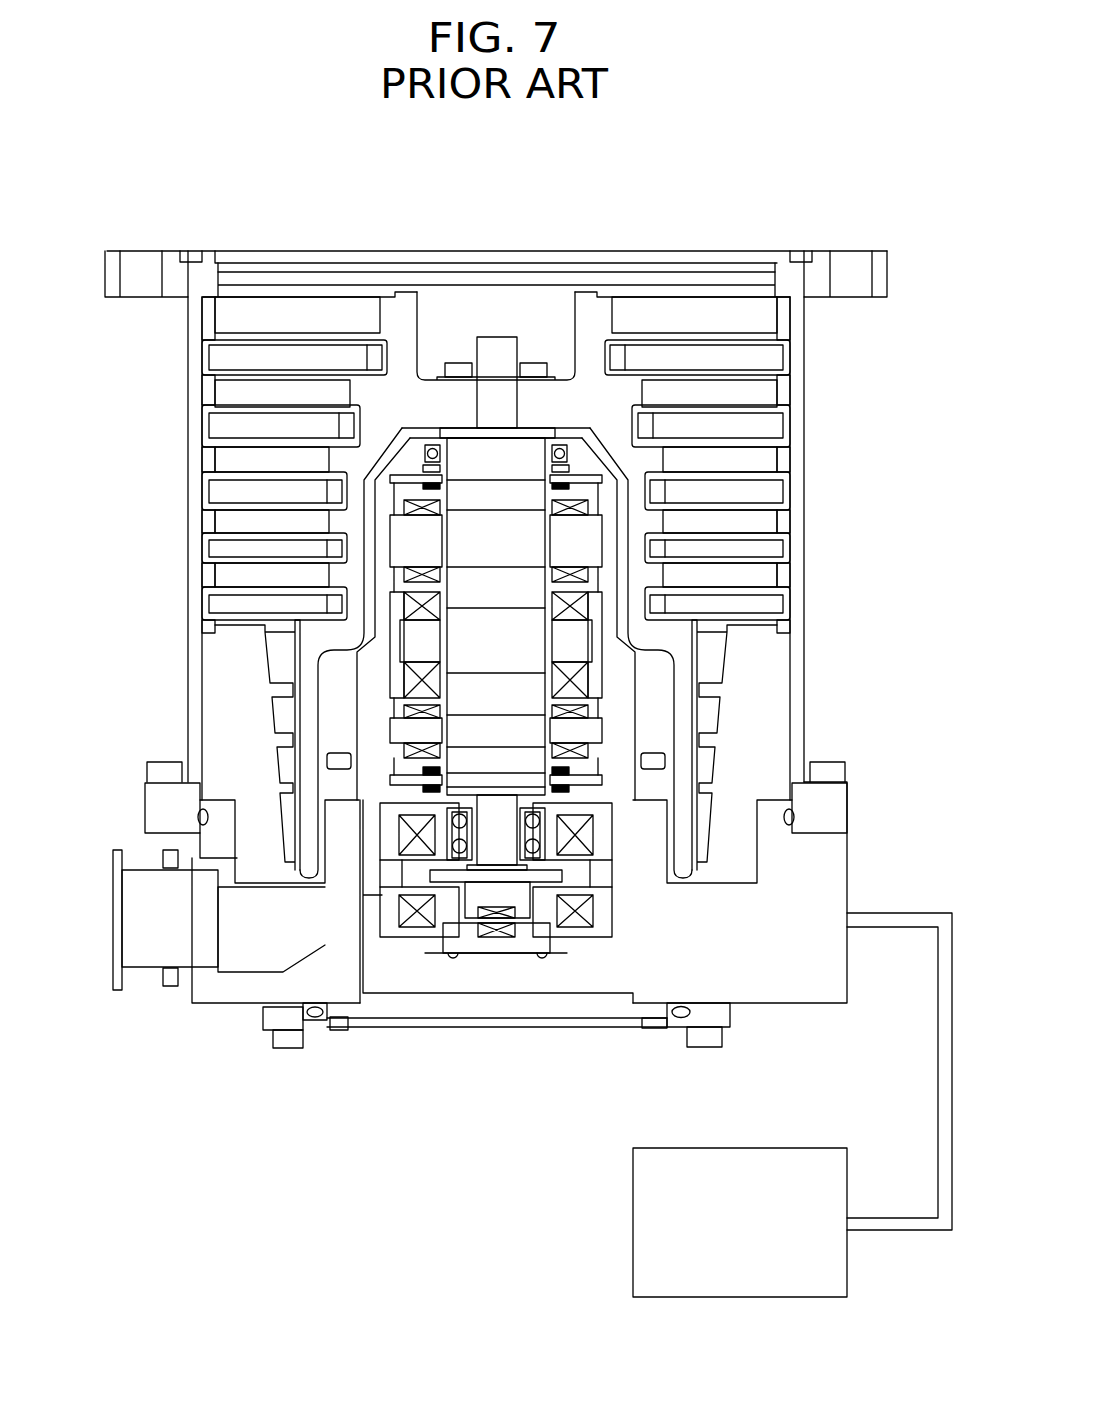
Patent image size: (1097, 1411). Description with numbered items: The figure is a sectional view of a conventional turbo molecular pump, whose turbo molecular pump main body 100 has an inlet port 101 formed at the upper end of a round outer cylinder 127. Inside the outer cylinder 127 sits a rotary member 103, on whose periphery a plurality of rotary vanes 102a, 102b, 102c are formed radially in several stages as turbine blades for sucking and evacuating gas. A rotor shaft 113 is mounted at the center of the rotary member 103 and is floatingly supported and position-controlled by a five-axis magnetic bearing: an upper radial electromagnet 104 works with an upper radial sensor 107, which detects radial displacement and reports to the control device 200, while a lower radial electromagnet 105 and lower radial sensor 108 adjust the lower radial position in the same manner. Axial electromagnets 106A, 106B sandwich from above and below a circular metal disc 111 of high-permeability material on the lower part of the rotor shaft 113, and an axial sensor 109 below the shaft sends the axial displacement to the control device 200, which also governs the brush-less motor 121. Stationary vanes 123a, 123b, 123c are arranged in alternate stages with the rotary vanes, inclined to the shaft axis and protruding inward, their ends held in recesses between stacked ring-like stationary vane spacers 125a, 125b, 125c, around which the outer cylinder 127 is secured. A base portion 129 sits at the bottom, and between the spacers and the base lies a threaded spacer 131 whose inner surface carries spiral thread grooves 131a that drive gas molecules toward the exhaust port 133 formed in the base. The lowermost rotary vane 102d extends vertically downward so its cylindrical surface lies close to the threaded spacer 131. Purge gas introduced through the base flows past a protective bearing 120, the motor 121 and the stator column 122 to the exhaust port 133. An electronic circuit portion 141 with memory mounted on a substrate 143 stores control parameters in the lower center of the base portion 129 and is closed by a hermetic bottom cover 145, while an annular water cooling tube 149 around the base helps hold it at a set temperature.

The turbo molecular pump main body 100 is at (706, 251).
The inlet port 101 is at (553, 262).
The rotary vane 102a is at (230, 320).
The rotary vane 102b is at (230, 393).
The rotary vane 102c is at (230, 460).
The rotary vane 102d is at (310, 703).
The rotary member 103 is at (428, 342).
The upper radial electromagnet 104 is at (603, 542).
The lower radial electromagnet 105 is at (603, 730).
The axial electromagnet 106A is at (593, 837).
The axial electromagnet 106B is at (593, 910).
The upper radial sensor 107 is at (593, 470).
The lower radial sensor 108 is at (598, 783).
The axial sensor 109 is at (495, 940).
The metal disc 111 is at (440, 877).
The rotor shaft 113 is at (533, 495).
The protective bearing 120 is at (460, 823).
The motor 121 is at (593, 640).
The stator column 122 is at (620, 673).
The stationary vane 123a is at (230, 358).
The stationary vane 123b is at (230, 427).
The stationary vane 123c is at (230, 492).
The stationary vane spacer 125a is at (212, 308).
The stationary vane spacer 125b is at (212, 387).
The stationary vane spacer 125c is at (212, 458).
The outer cylinder 127 is at (797, 397).
The base portion 129 is at (770, 993).
The threaded spacer 131 is at (227, 743).
The spiral thread groove 131a is at (285, 664).
The exhaust port 133 is at (147, 957).
The electronic circuit portion 141 is at (449, 966).
The substrate 143 is at (560, 955).
The hermetic bottom cover 145 is at (375, 1032).
The annular water cooling tube 149 is at (680, 1015).
The control device 200 is at (632, 1228).